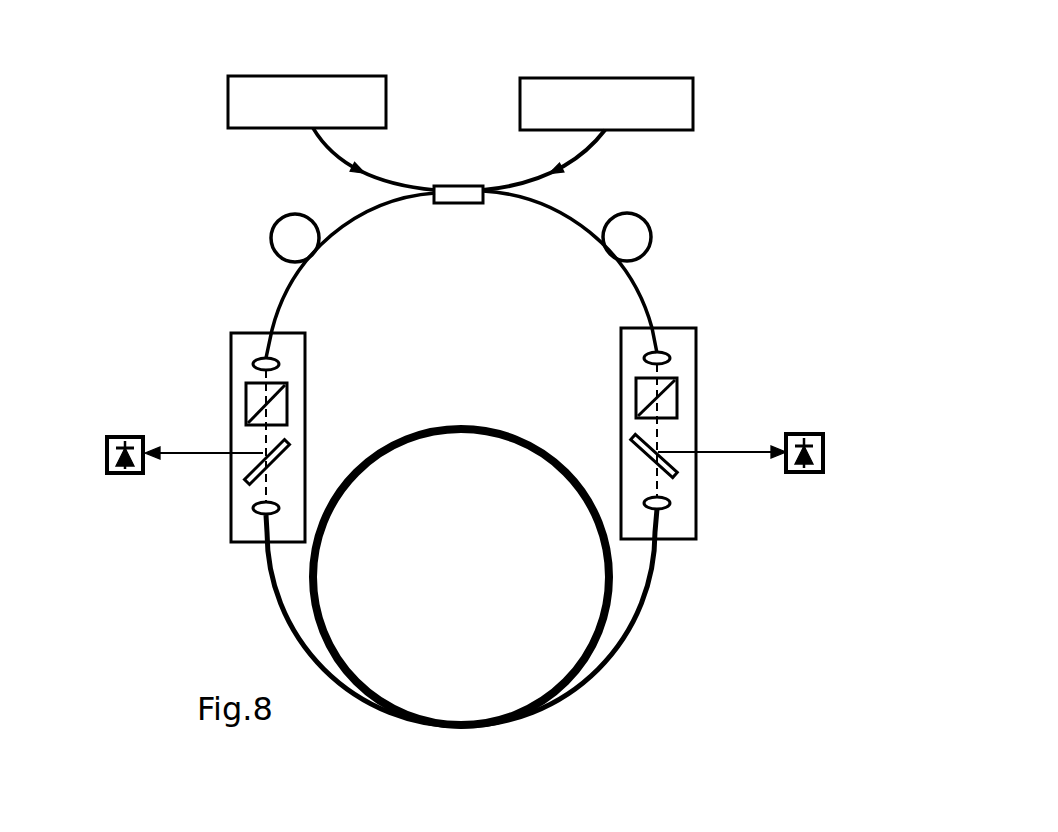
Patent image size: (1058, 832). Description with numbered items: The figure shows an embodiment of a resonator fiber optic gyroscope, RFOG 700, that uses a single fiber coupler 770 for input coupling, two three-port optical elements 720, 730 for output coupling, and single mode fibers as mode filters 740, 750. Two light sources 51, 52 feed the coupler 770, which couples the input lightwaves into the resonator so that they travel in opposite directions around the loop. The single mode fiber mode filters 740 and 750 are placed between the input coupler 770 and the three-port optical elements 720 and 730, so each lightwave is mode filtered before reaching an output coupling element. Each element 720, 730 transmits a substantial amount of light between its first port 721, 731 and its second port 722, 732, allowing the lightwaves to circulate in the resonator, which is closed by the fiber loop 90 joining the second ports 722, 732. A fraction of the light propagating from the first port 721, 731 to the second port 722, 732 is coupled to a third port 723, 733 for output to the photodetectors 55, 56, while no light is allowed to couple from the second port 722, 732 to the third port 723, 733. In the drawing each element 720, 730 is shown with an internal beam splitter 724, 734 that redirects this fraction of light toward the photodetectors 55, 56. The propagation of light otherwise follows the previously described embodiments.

The RFOG 700 is at (850, 74).
The light source 51 is at (228, 97).
The light source 52 is at (693, 92).
The fiber coupler 770 is at (452, 204).
The single mode fiber mode filter 740 is at (272, 235).
The single mode fiber mode filter 750 is at (653, 223).
The three-port optical element 720 is at (260, 459).
The first port 721 is at (273, 328).
The second port 722 is at (265, 550).
The third port 723 is at (223, 455).
The beam splitter 724 is at (288, 447).
The three-port optical element 730 is at (671, 453).
The first port 731 is at (653, 323).
The second port 732 is at (658, 542).
The third port 733 is at (700, 453).
The beam splitter 734 is at (640, 437).
The photodetector 55 is at (107, 437).
The photodetector 56 is at (823, 435).
The fiber loop 90 is at (520, 452).